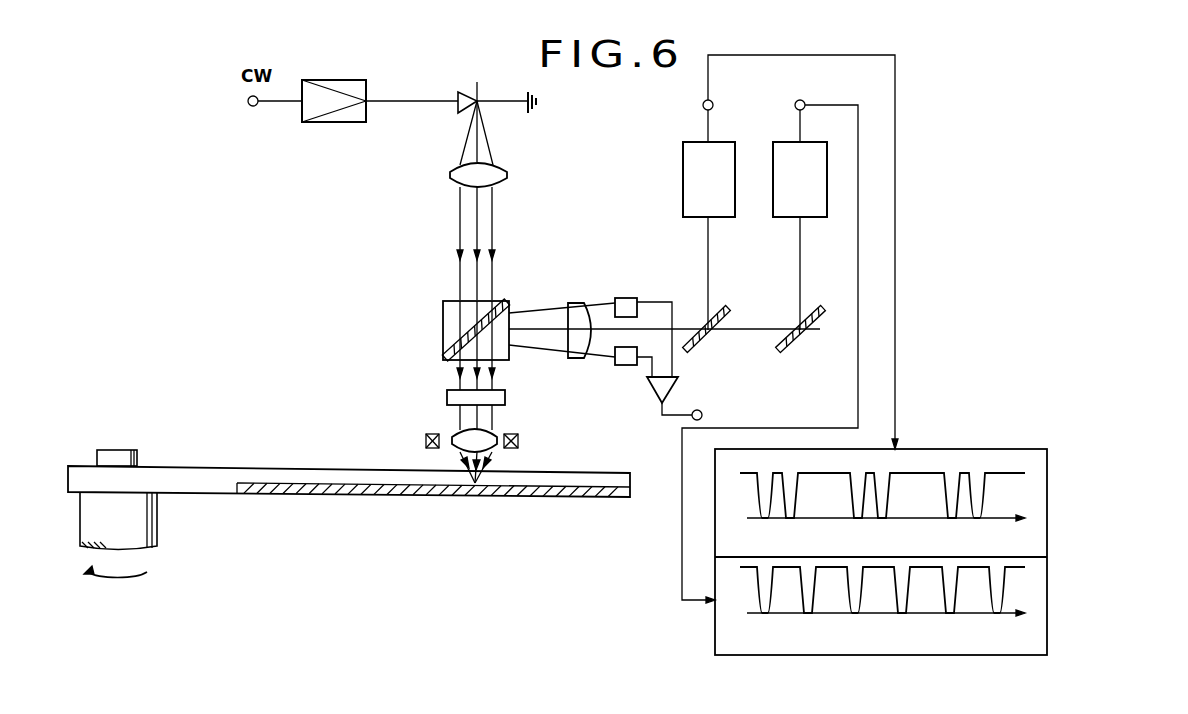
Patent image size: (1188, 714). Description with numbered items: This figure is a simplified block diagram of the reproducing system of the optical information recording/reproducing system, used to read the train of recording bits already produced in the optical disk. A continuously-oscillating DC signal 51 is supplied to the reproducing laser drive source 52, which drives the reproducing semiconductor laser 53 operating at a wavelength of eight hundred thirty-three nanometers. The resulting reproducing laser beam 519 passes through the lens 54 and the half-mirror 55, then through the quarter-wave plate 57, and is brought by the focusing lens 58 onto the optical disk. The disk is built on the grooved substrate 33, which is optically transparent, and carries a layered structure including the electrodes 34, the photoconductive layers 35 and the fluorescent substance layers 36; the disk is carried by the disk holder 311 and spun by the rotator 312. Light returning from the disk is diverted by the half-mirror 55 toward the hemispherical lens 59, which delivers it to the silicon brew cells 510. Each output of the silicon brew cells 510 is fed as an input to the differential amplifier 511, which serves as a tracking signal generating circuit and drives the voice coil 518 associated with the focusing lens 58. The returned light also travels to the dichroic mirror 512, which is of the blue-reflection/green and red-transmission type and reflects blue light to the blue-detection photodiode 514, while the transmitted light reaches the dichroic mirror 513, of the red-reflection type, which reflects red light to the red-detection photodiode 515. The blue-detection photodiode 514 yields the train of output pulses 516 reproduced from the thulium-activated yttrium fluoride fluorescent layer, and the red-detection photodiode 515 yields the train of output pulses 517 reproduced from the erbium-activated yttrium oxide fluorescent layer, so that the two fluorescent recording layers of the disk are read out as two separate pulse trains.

The continuously-oscillating reproducing signal 51 is at (252, 106).
The reproducing laser drive source 52 is at (366, 80).
The reproducing semiconductor laser 53 is at (471, 106).
The lens 54 is at (507, 170).
The half-mirror 55 is at (443, 320).
The λ/4 plate 57 is at (441, 393).
The focusing lens 58 is at (497, 432).
The hemispherical lens 59 is at (575, 302).
The silicon brew cell 510 is at (632, 298).
The differential amplifier 511 is at (672, 380).
The dichroic mirror 512 is at (723, 305).
The dichroic mirror 513 is at (820, 305).
The blue-detection photodiode 514 is at (683, 168).
The red-detection photodiode 515 is at (827, 155).
The train of output pulses 516 is at (1047, 500).
The train of output pulses 517 is at (1047, 610).
The voice coil 518 is at (425, 440).
The reproducing laser beam 519 is at (458, 260).
The grooved substrate 33 is at (602, 472).
The electrodes 34 is at (555, 497).
The photoconductive layers 35 is at (437, 490).
The fluorescent substance layers 36 is at (561, 491).
The disk holder 311 is at (120, 450).
The rotator 312 is at (157, 525).